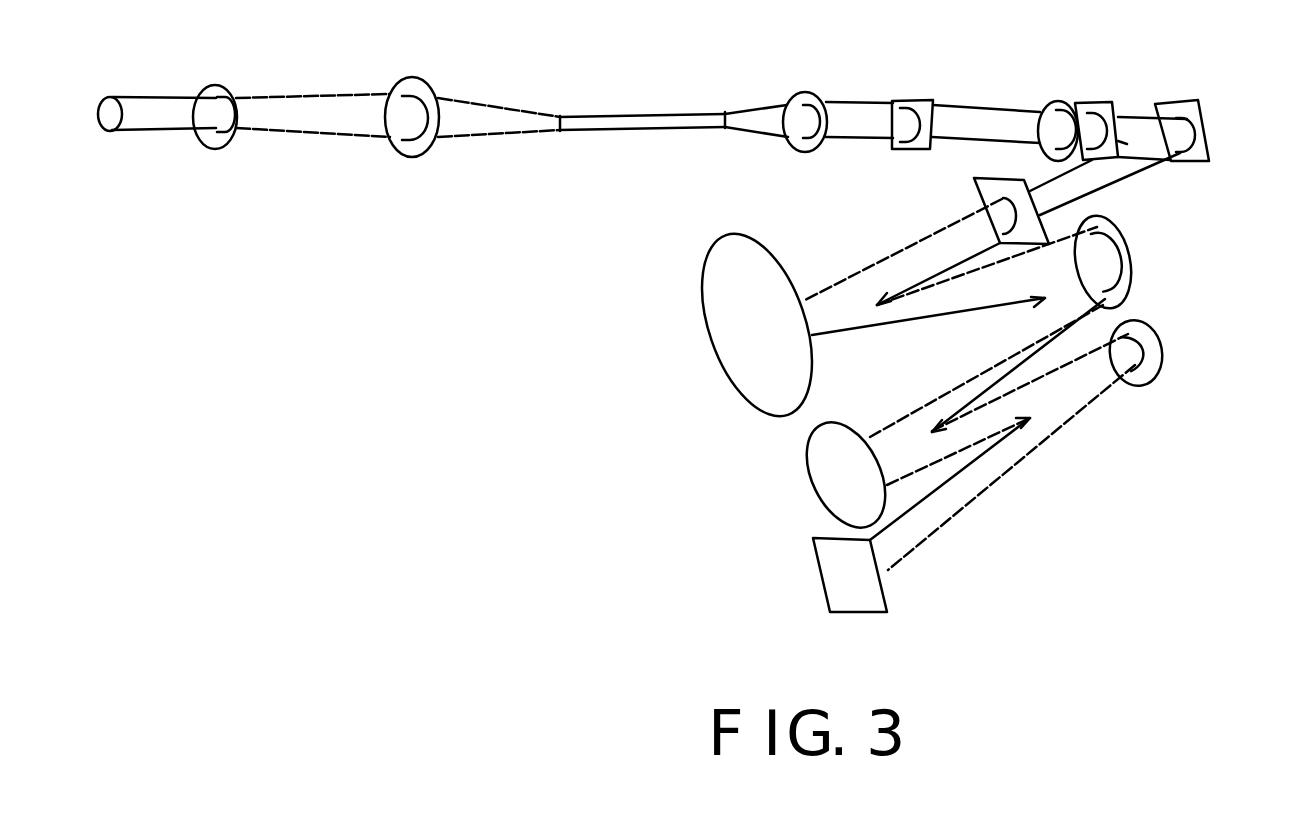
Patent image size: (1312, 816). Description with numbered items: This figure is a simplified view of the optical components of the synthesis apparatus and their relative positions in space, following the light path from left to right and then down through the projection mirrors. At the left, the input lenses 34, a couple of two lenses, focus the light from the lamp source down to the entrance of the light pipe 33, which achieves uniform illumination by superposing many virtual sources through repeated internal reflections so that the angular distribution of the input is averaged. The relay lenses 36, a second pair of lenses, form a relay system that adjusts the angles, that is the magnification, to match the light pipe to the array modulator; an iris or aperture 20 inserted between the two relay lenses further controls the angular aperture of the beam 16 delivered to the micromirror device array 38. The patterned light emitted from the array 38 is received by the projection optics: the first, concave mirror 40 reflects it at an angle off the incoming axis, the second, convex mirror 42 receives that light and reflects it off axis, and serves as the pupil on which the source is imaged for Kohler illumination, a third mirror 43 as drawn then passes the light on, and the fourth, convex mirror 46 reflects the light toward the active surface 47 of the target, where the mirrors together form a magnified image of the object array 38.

The input lenses 34 is at (397, 75).
The light pipe 33 is at (607, 113).
The relay lenses 36 is at (1057, 102).
The aperture (iris) 20 is at (920, 98).
The collimated output beam 16 is at (1135, 115).
The micromirror device array 38 is at (1203, 115).
The first concave mirror 40 is at (702, 268).
The second convex mirror 42 is at (1118, 231).
The mirror M3 43 is at (800, 455).
The fourth convex mirror 46 is at (1150, 333).
The active surface 47 is at (815, 588).